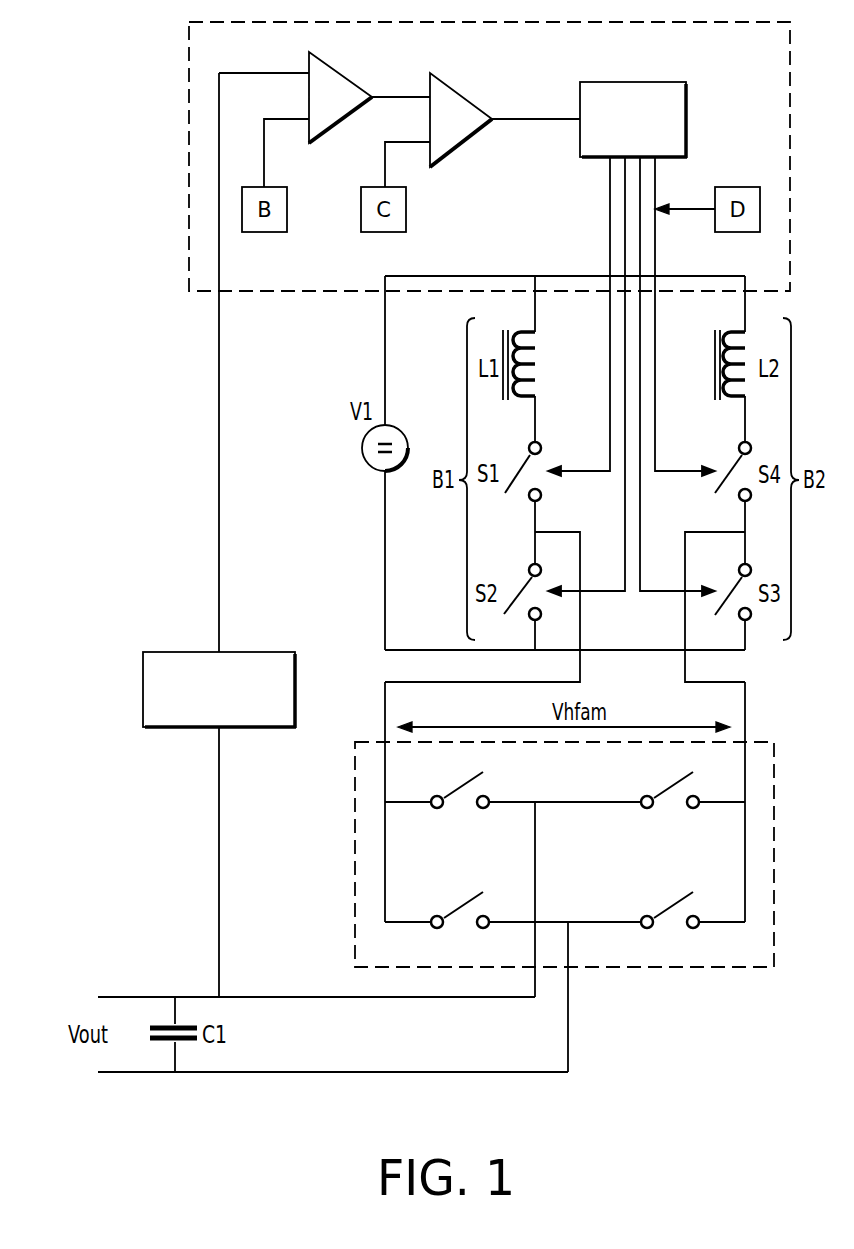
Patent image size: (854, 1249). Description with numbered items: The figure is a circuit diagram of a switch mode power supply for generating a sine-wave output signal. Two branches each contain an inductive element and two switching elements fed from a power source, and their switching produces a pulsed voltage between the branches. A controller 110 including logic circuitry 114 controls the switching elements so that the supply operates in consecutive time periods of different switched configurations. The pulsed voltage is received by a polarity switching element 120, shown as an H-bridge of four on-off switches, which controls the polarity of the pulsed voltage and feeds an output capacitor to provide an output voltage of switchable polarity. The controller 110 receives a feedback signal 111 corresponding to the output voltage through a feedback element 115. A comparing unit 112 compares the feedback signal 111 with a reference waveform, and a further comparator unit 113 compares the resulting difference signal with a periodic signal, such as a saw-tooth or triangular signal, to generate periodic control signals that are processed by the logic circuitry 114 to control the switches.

The controller 110 is at (189, 107).
The feedback signal 111 is at (219, 410).
The comparing unit 112 is at (345, 74).
The further comparator unit 113 is at (458, 92).
The logic circuitry 114 is at (645, 82).
The feedback element 115 is at (165, 652).
The polarity switching element 120 is at (722, 967).